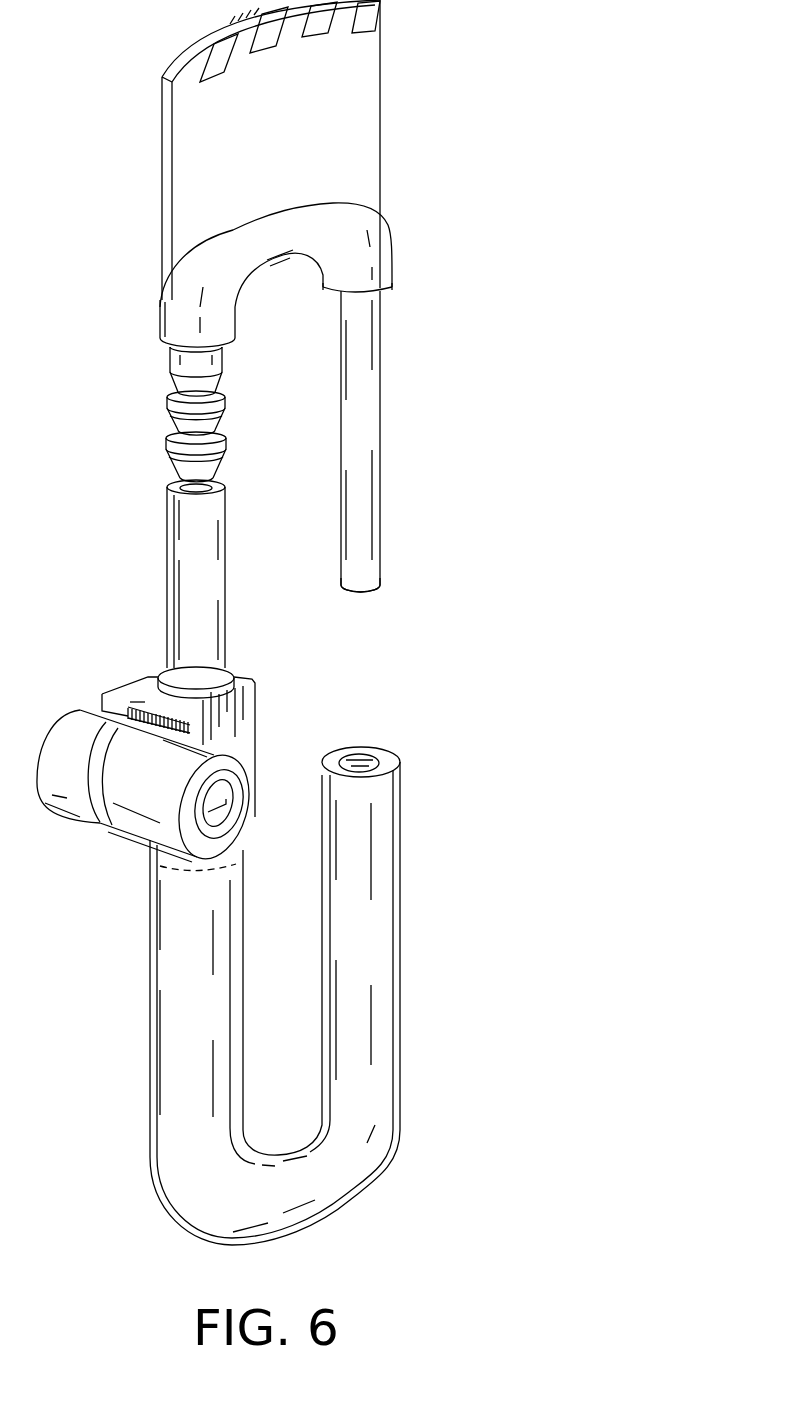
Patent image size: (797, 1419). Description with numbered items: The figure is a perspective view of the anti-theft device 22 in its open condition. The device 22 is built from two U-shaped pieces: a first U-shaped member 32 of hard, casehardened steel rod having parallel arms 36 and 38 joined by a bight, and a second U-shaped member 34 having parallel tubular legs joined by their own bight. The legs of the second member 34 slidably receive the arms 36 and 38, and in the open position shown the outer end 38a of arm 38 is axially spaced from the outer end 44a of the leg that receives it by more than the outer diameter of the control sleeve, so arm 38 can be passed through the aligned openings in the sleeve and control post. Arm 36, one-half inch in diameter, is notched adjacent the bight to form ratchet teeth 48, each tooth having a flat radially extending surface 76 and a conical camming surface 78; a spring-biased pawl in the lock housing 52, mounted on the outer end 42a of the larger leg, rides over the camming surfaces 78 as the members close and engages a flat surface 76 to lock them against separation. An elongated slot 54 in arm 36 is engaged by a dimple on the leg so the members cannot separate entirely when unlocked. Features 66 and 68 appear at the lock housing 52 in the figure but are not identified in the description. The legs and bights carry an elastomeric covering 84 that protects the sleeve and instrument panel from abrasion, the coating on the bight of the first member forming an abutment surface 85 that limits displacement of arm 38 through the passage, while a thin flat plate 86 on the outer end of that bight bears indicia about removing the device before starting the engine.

The anti-theft device 22 is at (600, 153).
The first U-shaped member 32 is at (166, 357).
The second U-shaped member 34 is at (150, 1102).
The arm 36 is at (205, 550).
The arm 38 is at (372, 413).
The outer end 38a is at (375, 578).
The outer end 42a is at (228, 675).
The outer end 44a is at (376, 752).
The ratchet teeth 48 is at (173, 410).
The lock housing 52 is at (117, 830).
The elongated slot 54 is at (175, 582).
The bore 66 is at (227, 831).
The clamp opening 68 is at (232, 782).
The flat radially extending surface 76 is at (175, 442).
The conical camming surface 78 is at (175, 465).
The elastomeric covering 84 is at (395, 225).
The abutment surface 85 is at (394, 290).
The thin flat plate 86 is at (370, 100).